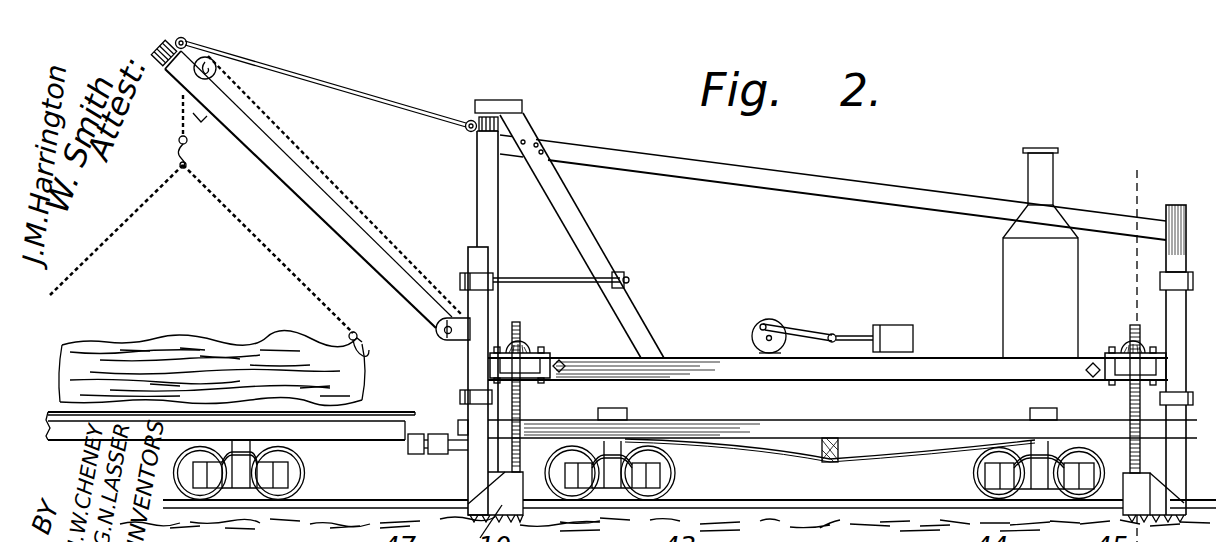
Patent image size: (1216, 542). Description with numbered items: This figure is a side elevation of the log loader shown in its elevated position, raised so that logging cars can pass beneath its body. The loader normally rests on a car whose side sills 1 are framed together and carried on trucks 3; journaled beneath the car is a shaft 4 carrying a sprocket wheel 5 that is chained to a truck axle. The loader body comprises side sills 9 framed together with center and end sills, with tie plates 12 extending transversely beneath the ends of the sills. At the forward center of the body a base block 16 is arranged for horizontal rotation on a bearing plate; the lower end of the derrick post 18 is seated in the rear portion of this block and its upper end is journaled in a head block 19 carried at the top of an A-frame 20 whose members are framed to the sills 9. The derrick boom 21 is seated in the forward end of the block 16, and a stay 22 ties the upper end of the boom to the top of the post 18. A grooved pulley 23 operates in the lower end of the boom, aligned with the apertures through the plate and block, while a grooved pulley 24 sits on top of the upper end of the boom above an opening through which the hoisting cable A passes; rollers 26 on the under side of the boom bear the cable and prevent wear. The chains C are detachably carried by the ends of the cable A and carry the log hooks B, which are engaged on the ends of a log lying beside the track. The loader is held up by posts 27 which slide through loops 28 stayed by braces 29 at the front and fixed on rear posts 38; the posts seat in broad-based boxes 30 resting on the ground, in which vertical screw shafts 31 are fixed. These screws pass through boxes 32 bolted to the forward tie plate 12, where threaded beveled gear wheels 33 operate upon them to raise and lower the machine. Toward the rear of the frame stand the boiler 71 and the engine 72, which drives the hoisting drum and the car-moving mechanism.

The side sills 1 is at (857, 428).
The trucks 3 is at (673, 474).
The shaft 4 is at (199, 63).
The sprocket wheel 5 is at (1158, 146).
The side sills 9 is at (800, 370).
The tie plates 12 is at (535, 382).
The base block 16 is at (463, 362).
The derrick post 18 is at (477, 176).
The head block 19 is at (505, 101).
The A-frame 20 is at (573, 236).
The derrick boom 21 is at (287, 173).
The stay 22 is at (376, 89).
The grooved pulley 23 is at (458, 338).
The grooved pulley 24 is at (214, 64).
The rollers 26 is at (204, 131).
The posts 27 is at (480, 262).
The loops 28 is at (463, 280).
The braces 29 is at (550, 279).
The boxes 30 is at (827, 498).
The screw shafts 31 is at (517, 322).
The boxes 32 is at (532, 353).
The beveled gear wheels 33 is at (566, 361).
The posts 38 is at (1174, 205).
The boiler 71 is at (1040, 253).
The engine 72 is at (833, 330).
The hoisting cable A is at (401, 239).
The log hooks B is at (364, 374).
The chains C is at (283, 264).